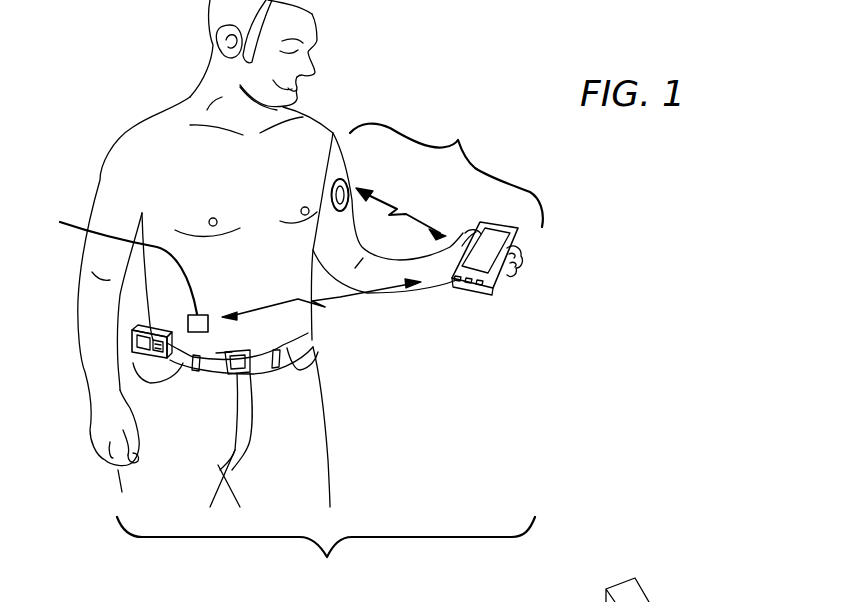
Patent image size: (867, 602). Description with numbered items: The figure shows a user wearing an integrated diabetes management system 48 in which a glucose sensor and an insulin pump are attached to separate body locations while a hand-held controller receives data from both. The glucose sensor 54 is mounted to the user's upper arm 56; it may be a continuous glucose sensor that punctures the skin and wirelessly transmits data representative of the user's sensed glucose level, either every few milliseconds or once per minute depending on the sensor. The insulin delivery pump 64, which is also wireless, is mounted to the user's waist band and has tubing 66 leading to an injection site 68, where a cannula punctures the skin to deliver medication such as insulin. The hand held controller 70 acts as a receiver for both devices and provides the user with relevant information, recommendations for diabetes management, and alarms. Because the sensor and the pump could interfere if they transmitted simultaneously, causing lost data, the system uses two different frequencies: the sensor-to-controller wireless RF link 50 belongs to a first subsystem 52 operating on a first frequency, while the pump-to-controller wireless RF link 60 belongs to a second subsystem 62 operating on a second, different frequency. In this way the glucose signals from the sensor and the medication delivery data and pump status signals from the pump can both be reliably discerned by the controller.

The integrated diabetes management system 48 is at (412, 93).
The sensor-to-controller wireless RF link 50 is at (412, 218).
The first subsystem 52 is at (446, 172).
The glucose sensor 54 is at (335, 180).
The upper arm 56 is at (343, 222).
The pump-to-controller wireless RF link 60 is at (368, 292).
The second subsystem 62 is at (326, 556).
The insulin delivery pump 64 is at (132, 343).
The tubing 66 is at (188, 323).
The injection site 68 is at (116, 265).
The hand held controller 70 is at (520, 237).